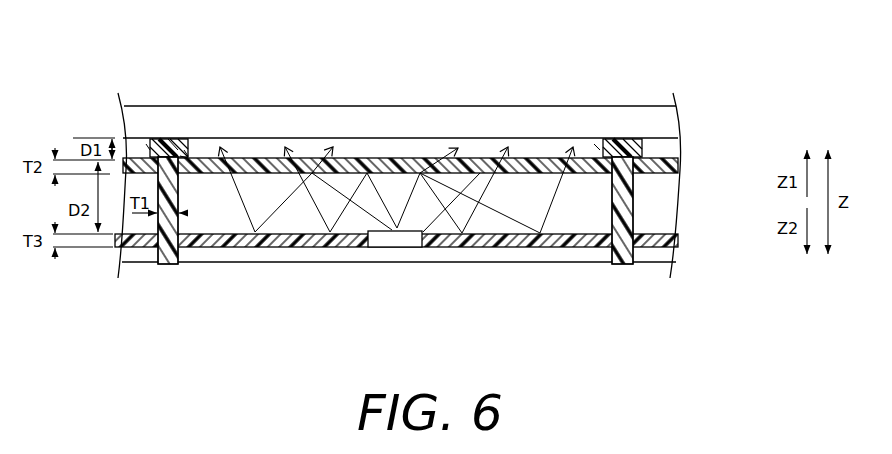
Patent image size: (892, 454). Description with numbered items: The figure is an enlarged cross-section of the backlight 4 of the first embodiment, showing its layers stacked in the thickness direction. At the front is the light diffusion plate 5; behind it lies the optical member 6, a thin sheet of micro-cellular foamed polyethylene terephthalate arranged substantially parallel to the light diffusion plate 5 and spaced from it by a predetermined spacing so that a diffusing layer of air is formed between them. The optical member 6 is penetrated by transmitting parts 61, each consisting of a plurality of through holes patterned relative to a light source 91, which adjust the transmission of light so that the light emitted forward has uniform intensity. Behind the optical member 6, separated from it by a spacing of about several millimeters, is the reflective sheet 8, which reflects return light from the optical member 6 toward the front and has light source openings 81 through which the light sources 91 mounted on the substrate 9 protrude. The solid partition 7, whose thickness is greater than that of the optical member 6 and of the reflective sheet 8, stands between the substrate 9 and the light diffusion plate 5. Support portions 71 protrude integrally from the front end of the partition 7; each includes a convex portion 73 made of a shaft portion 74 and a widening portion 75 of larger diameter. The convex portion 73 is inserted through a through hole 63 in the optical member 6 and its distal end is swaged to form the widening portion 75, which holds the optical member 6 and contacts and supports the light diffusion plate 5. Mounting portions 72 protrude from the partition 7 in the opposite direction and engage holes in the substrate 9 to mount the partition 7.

The backlight 4 is at (670, 66).
The light diffusion plate 5 is at (670, 127).
The optical member 6 is at (675, 163).
The partition 7 is at (650, 207).
The reflective sheet 8 is at (670, 237).
The substrate 9 is at (660, 255).
The transmitting part 61 is at (455, 140).
The through hole 63 is at (178, 146).
The support portion 71 is at (139, 144).
The mounting portion 72 is at (157, 258).
The convex portion 73 is at (170, 142).
The shaft portion 74 is at (184, 157).
The widening portion 75 is at (187, 154).
The light source opening 81 is at (367, 248).
The light source 91 is at (405, 240).